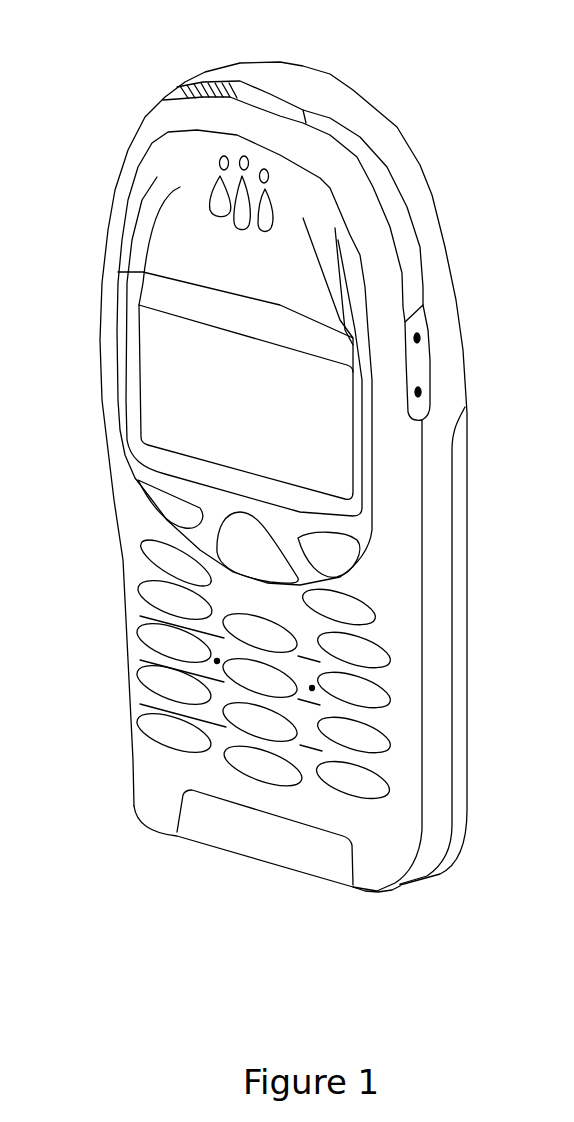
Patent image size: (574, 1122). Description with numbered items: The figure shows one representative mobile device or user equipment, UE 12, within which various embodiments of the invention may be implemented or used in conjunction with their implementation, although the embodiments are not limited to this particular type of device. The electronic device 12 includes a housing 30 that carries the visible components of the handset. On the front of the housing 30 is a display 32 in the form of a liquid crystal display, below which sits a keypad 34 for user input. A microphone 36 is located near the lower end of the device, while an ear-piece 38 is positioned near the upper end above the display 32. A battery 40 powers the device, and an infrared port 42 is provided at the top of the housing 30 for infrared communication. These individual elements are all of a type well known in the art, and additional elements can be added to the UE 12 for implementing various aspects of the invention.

The mobile device or UE 12 is at (398, 79).
The housing 30 is at (438, 230).
The display 32 is at (325, 445).
The keypad 34 is at (353, 787).
The microphone 36 is at (203, 826).
The ear-piece 38 is at (233, 189).
The battery 40 is at (462, 767).
The infrared port 42 is at (265, 99).